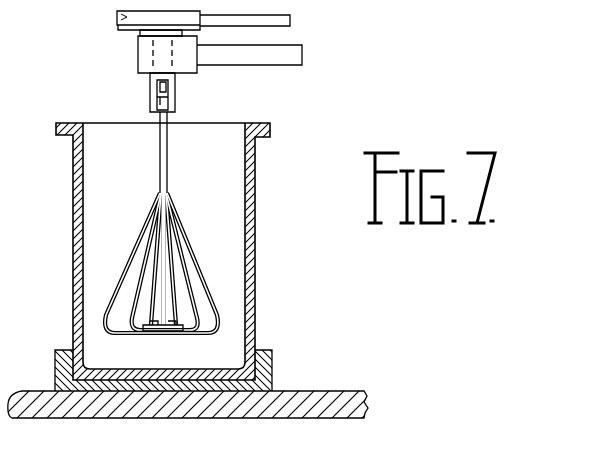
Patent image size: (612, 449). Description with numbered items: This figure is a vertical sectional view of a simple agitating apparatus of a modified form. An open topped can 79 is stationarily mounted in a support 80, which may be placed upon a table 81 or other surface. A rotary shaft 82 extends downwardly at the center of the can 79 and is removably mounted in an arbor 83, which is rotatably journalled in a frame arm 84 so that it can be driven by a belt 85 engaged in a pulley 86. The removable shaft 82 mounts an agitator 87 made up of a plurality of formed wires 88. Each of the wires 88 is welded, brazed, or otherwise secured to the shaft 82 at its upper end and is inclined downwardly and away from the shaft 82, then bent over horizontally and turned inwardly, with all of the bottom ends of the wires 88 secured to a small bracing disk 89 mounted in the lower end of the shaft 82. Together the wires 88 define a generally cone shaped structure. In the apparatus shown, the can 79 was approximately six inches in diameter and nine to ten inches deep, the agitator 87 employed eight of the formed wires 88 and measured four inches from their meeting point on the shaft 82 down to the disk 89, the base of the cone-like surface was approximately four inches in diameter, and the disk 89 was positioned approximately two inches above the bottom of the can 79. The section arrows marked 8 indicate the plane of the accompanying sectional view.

The can 79 is at (252, 262).
The support 80 is at (272, 371).
The table 81 is at (328, 392).
The rotary shaft 82 is at (163, 148).
The arbor 83 is at (176, 89).
The frame arm 84 is at (281, 60).
The belt 85 is at (292, 25).
The pulley 86 is at (130, 35).
The agitator 87 is at (205, 280).
The formed wires 88 is at (218, 305).
The bracing disk 89 is at (170, 333).
The section line 8- 8 is at (103, 215).